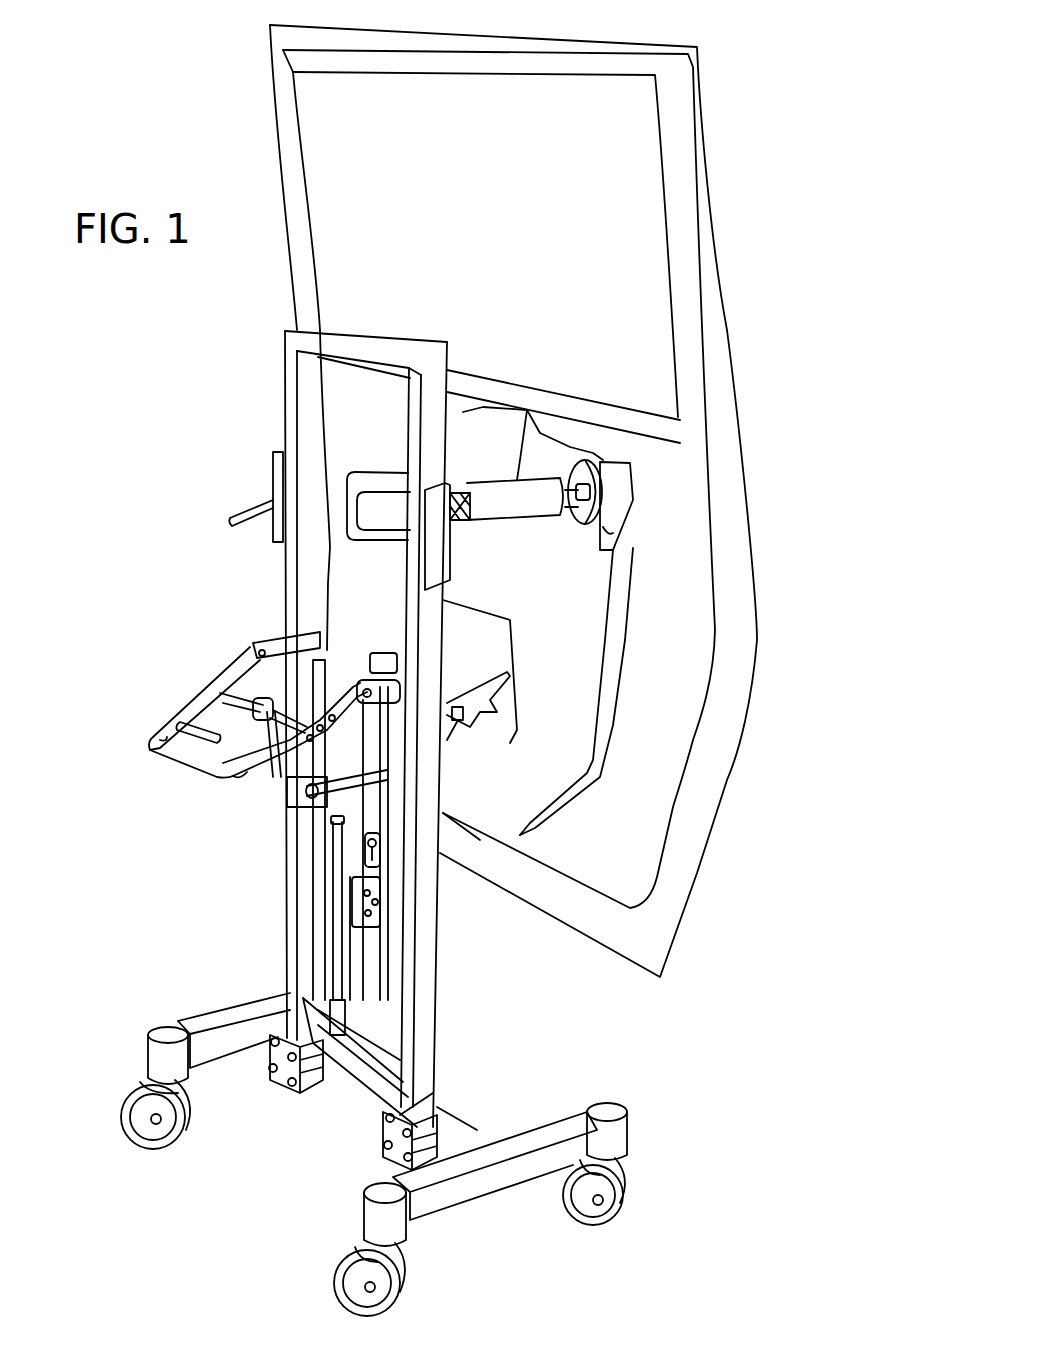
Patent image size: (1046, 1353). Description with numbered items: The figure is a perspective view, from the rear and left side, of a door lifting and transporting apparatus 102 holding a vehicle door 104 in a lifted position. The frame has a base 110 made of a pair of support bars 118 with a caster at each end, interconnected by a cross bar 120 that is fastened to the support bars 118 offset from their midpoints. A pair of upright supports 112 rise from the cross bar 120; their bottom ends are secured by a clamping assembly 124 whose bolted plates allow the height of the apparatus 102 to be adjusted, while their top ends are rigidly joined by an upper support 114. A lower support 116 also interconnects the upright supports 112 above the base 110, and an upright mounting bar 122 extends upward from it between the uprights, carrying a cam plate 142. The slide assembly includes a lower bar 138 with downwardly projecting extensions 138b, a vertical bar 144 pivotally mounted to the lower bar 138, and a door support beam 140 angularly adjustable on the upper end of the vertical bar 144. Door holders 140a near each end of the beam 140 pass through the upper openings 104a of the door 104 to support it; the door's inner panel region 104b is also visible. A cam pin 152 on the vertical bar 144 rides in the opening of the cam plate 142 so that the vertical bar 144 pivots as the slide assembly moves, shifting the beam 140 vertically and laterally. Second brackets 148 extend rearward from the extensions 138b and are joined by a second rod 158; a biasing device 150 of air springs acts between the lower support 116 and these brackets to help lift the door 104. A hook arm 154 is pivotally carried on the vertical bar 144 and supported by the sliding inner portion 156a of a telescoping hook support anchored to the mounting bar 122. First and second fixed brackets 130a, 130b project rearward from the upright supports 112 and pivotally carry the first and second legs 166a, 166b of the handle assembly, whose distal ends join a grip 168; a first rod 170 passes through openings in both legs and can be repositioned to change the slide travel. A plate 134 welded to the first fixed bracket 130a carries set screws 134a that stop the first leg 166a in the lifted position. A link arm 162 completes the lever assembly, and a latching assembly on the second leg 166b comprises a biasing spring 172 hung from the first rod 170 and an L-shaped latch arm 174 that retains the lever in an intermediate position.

The door lifting and transporting apparatus 102 is at (122, 578).
The vehicle door 104 is at (695, 70).
The upper openings 104a is at (623, 530).
The door inner panel 104b is at (497, 727).
The base 110 is at (497, 1110).
The upright supports 112 is at (290, 963).
The upper support 114 is at (360, 333).
The lower support 116 is at (400, 1113).
The support bars 118 is at (207, 1020).
The cross bar 120 is at (357, 1103).
The upright mounting bar 122 is at (343, 947).
The clamping assembly 124 is at (268, 1087).
The first fixed bracket 130a is at (443, 813).
The second fixed bracket 130b is at (308, 640).
The plate 134 is at (395, 665).
The set screws 134a is at (380, 657).
The lower bar 138 is at (353, 640).
The extensions 138b is at (262, 655).
The door support beam 140 is at (523, 477).
The door holders 140a is at (357, 473).
The cam plate 142 is at (350, 842).
The vertical bar 144 is at (450, 540).
The second brackets 148 is at (350, 803).
The biasing device 150 is at (330, 878).
The cam pin 152 is at (385, 913).
The hook arm 154 is at (477, 683).
The sliding inner portion 156a is at (453, 720).
The second rod 158 is at (323, 800).
The link arm 162 is at (233, 697).
The first leg 166a is at (247, 772).
The second leg 166b is at (167, 737).
The grip 168 is at (170, 753).
The first rod 170 is at (258, 697).
The biasing spring 172 is at (203, 703).
The latch arm 174 is at (214, 717).